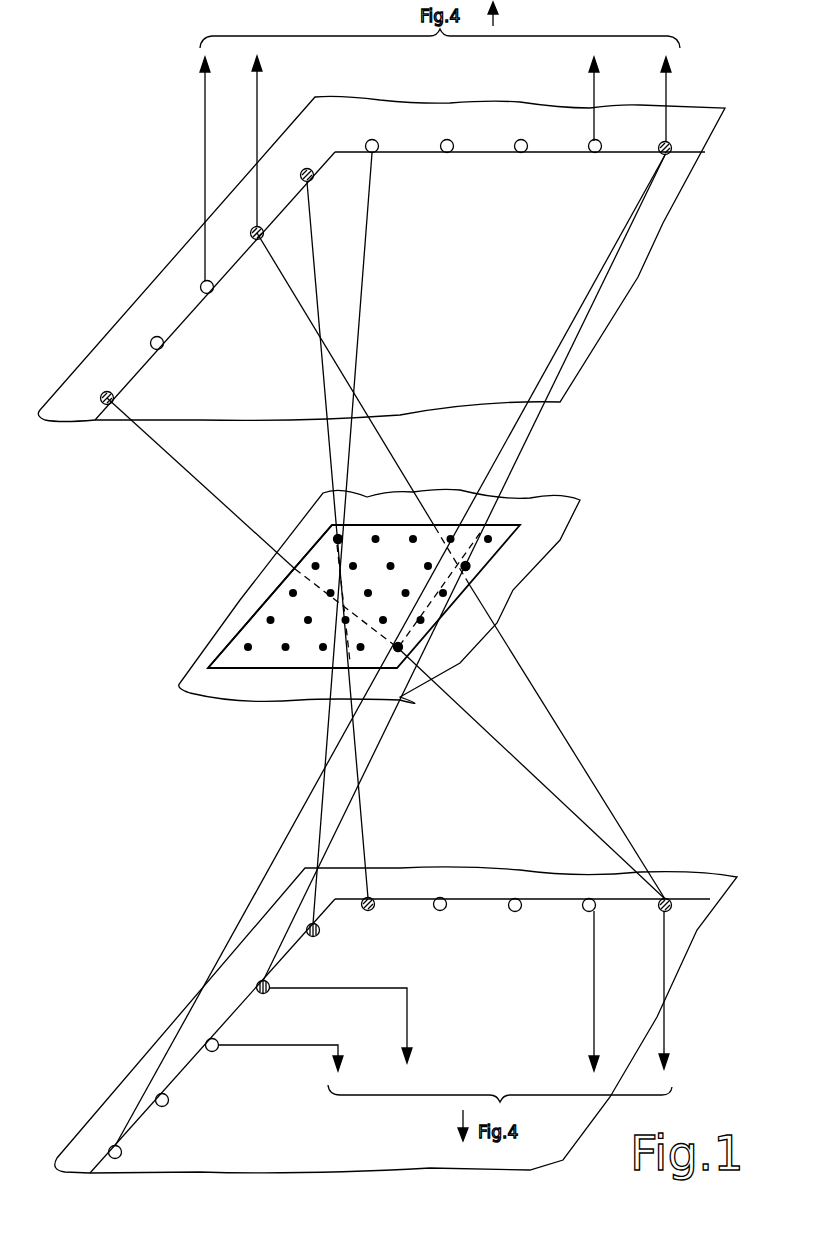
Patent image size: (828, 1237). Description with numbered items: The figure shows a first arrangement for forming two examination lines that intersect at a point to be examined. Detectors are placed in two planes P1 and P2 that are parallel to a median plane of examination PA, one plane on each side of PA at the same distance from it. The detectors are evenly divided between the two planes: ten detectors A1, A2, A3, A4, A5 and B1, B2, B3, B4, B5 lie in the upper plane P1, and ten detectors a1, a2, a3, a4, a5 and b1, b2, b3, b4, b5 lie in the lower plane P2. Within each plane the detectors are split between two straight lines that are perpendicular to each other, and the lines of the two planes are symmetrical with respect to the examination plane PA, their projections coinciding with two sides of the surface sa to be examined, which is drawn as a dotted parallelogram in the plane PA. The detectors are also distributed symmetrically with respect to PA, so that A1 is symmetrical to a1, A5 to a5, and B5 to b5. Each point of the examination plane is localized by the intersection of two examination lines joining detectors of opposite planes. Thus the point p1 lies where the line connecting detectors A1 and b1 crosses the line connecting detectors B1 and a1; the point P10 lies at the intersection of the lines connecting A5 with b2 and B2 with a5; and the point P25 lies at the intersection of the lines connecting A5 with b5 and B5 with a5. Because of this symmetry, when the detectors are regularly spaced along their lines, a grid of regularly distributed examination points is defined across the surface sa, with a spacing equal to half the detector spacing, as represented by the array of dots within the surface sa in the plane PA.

The first detector plane P1 is at (65, 410).
The second detector plane P2 is at (120, 1082).
The median plane of examination PA is at (182, 690).
The surface to be examined sa is at (430, 608).
The detector A1 is at (369, 142).
The detector A2 is at (446, 142).
The detector A3 is at (515, 142).
The detector A4 is at (610, 135).
The detector A5 is at (670, 143).
The detector B1 is at (303, 172).
The detector B2 is at (252, 230).
The detector B3 is at (201, 289).
The detector B4 is at (152, 345).
The detector B5 is at (103, 393).
The detector a1 is at (366, 912).
The detector a2 is at (438, 912).
The detector a3 is at (513, 912).
The detector a4 is at (595, 911).
The detector a5 is at (670, 911).
The detector b1 is at (316, 937).
The detector b2 is at (269, 992).
The detector b3 is at (216, 1052).
The detector b4 is at (168, 1104).
The detector b5 is at (121, 1155).
The examination point p1 is at (342, 533).
The examination point P10 is at (470, 567).
The examination point P25 is at (399, 652).